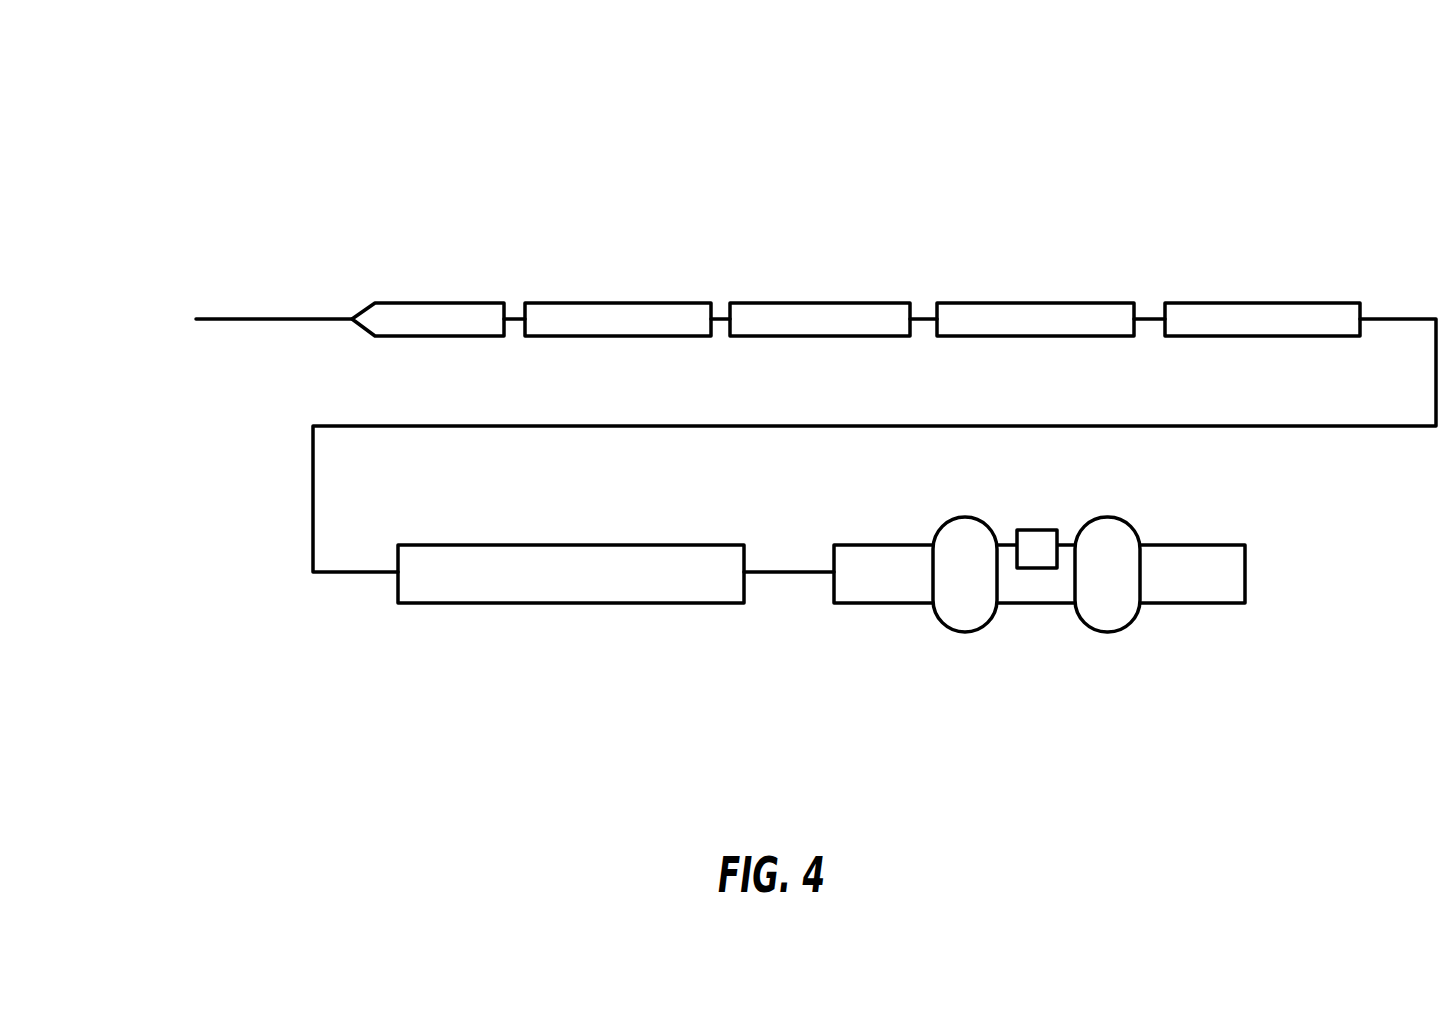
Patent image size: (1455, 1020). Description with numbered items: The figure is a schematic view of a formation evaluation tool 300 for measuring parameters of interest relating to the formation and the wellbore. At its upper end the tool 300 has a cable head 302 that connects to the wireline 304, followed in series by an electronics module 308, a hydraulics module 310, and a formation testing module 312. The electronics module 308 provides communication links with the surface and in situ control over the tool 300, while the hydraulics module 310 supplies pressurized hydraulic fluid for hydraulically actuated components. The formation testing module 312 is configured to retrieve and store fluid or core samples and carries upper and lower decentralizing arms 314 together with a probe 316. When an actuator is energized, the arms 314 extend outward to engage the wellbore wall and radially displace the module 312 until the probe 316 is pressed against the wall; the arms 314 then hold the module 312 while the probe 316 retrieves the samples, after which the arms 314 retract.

The formation evaluation tool 300 is at (232, 82).
The cable head 302 is at (410, 303).
The wireline 304 is at (258, 318).
The electronics module 308 is at (1193, 303).
The hydraulics module 310 is at (435, 545).
The formation testing module 312 is at (867, 545).
The decentralizing arms 314 is at (950, 672).
The probe 316 is at (1033, 530).